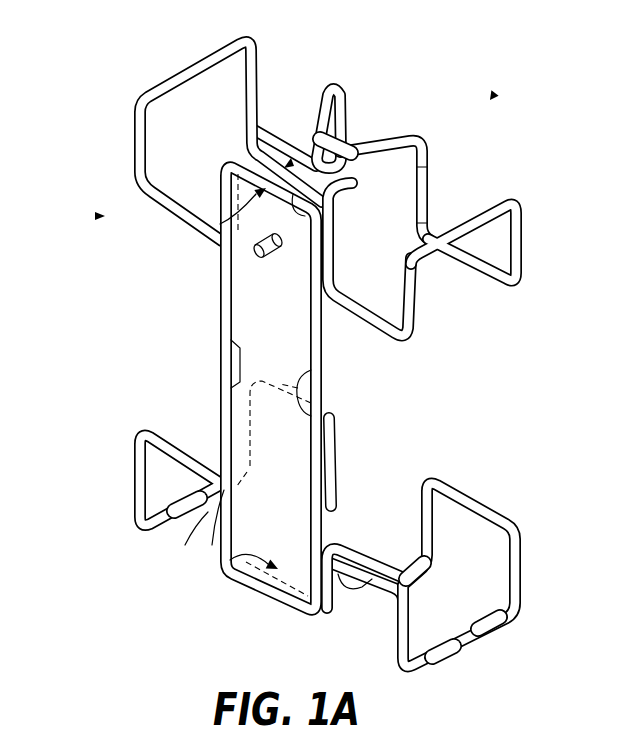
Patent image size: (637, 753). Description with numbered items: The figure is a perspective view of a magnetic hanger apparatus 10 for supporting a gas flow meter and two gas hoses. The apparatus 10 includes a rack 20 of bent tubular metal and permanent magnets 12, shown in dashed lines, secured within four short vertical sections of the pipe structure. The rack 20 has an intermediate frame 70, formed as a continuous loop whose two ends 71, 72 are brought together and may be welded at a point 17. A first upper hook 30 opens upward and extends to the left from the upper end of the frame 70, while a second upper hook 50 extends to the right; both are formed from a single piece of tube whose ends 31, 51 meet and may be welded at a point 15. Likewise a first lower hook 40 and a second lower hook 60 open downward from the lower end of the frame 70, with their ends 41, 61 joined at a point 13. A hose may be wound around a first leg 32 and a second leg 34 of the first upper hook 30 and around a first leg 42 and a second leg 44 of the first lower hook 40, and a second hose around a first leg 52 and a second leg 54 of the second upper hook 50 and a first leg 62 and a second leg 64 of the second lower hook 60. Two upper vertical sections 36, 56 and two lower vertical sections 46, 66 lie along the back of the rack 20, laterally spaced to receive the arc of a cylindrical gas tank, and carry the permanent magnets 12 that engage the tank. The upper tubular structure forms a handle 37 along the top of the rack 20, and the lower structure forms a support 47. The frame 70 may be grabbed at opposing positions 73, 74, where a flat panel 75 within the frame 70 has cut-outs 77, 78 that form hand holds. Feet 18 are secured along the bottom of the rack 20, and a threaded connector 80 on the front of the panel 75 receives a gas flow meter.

The apparatus 10 is at (495, 93).
The permanent magnets 12 is at (338, 127).
The weld point 13 is at (238, 577).
The weld point 15 is at (292, 160).
The weld point 17 is at (221, 239).
The feet 18 is at (185, 513).
The rack 20 is at (95, 216).
The first upper hook 30 is at (182, 68).
The end 31 is at (256, 152).
The first leg 32 is at (175, 211).
The second leg 34 is at (272, 139).
The first upper vertical section 36 is at (338, 108).
The handle 37 is at (355, 148).
The first lower hook 40 is at (134, 483).
The end 41 is at (242, 592).
The first leg 42 is at (174, 447).
The second leg 44 is at (323, 406).
The first lower vertical section 46 is at (338, 443).
The support 47 is at (347, 591).
The second upper hook 50 is at (524, 225).
The end 51 is at (322, 185).
The first leg 52 is at (373, 307).
The second leg 54 is at (461, 264).
The second upper vertical section 56 is at (430, 204).
The second lower hook 60 is at (521, 569).
The end 61 is at (272, 606).
The first leg 62 is at (362, 560).
The second leg 64 is at (468, 500).
The second lower vertical section 66 is at (432, 549).
The intermediate frame 70 is at (222, 293).
The end 71 is at (240, 161).
The end 72 is at (308, 215).
The position 73 is at (232, 357).
The position 74 is at (320, 394).
The flat panel 75 is at (267, 305).
The cut-out 77 is at (240, 368).
The cut-out 78 is at (307, 381).
The threaded connector 80 is at (272, 251).